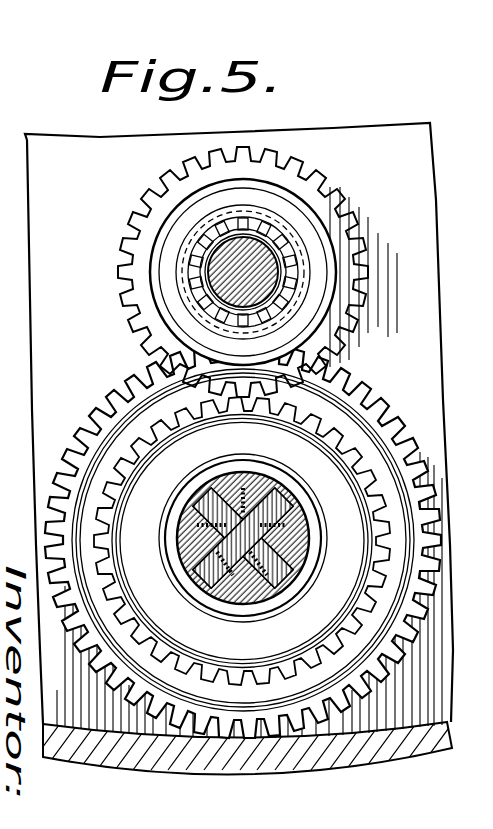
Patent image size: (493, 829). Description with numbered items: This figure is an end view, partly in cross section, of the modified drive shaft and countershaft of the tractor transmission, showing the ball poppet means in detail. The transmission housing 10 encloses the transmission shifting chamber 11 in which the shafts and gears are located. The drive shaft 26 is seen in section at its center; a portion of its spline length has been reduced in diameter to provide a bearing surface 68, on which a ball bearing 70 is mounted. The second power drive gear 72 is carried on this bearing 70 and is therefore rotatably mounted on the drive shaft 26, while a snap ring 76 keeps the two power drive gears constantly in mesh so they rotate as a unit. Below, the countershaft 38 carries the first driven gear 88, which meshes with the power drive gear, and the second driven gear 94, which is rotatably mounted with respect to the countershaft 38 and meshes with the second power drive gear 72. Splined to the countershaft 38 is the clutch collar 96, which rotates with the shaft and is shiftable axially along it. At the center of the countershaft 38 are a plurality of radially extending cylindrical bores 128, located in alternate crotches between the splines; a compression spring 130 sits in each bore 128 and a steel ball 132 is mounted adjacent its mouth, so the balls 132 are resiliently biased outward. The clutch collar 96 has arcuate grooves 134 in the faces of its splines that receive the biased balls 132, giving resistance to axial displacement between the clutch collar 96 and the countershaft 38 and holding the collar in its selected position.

The transmission housing 10 is at (396, 768).
The transmission shifting chamber 11 is at (388, 695).
The drive shaft 26 is at (240, 248).
The bearing surface 68 is at (228, 240).
The ball bearing 70 is at (292, 248).
The second power drive gear 72 is at (325, 260).
The snap ring 76 is at (307, 293).
The first driven gear 88 is at (120, 680).
The second driven gear 94 is at (353, 628).
The clutch collar 96 is at (302, 520).
The countershaft 38 is at (300, 498).
The cylindrical bores 128 is at (267, 497).
The compression spring 130 is at (218, 502).
The steel ball 132 is at (242, 497).
The arcuate grooves 134 is at (292, 553).